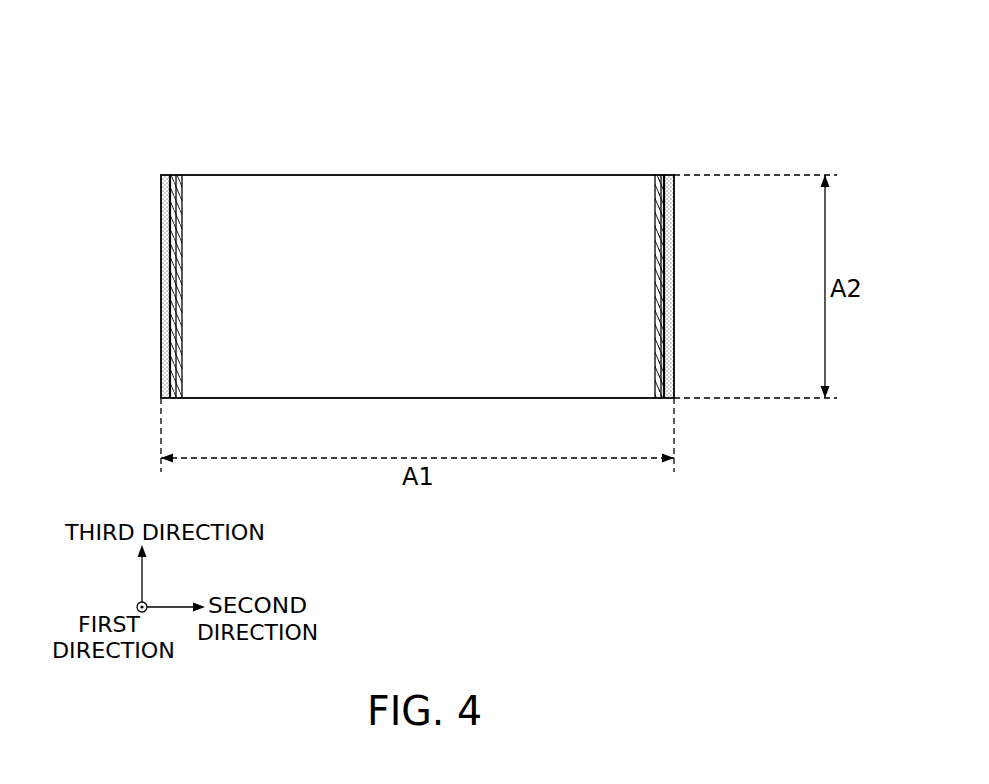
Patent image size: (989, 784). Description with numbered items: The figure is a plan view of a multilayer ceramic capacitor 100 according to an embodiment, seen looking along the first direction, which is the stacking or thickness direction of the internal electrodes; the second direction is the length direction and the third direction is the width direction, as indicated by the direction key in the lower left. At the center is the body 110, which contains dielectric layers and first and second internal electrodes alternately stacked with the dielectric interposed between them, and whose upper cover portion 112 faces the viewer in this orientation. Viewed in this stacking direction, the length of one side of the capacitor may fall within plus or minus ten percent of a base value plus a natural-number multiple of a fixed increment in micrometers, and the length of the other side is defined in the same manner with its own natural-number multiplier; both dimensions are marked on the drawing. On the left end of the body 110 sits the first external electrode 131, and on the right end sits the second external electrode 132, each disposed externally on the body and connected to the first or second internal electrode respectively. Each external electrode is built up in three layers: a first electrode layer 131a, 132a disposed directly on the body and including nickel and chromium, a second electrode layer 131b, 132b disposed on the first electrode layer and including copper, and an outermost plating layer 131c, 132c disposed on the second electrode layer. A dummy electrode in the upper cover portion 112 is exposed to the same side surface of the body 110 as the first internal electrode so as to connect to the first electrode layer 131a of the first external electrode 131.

The multilayer ceramic capacitor 100 is at (155, 70).
The body 110 is at (583, 175).
The upper cover portion 112 is at (339, 216).
The first external electrode 131 is at (104, 286).
The first electrode layer 131a is at (166, 278).
The second electrode layer 131b is at (176, 251).
The plating layer 131c is at (176, 220).
The second external electrode 132 is at (737, 286).
The first electrode layer 132a is at (659, 279).
The second electrode layer 132b is at (657, 253).
The plating layer 132c is at (656, 223).